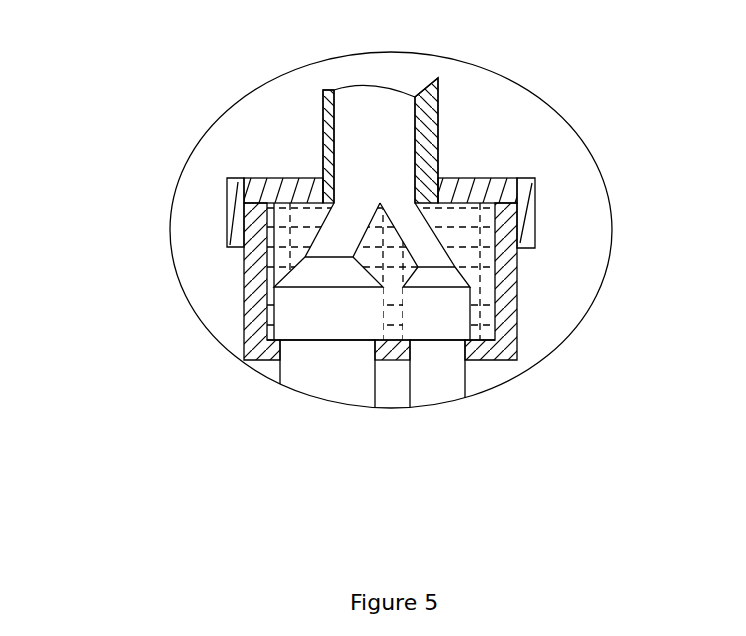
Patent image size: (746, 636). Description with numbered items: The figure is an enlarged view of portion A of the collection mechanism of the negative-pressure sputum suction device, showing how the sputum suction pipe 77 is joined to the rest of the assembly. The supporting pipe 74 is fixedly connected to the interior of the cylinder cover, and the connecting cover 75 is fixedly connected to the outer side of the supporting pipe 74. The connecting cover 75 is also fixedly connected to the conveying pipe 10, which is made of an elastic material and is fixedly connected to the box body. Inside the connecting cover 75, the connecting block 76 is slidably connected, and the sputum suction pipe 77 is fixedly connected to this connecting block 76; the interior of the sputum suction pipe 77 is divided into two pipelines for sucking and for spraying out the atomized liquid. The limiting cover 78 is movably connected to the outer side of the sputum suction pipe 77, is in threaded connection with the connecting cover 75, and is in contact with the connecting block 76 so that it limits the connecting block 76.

The sputum suction pipe 77 is at (433, 130).
The limiting cover 78 is at (505, 192).
The connecting block 76 is at (290, 218).
The connecting cover 75 is at (252, 290).
The supporting pipe 74 is at (327, 363).
The conveying pipe 10 is at (437, 350).
The portion A is at (490, 385).